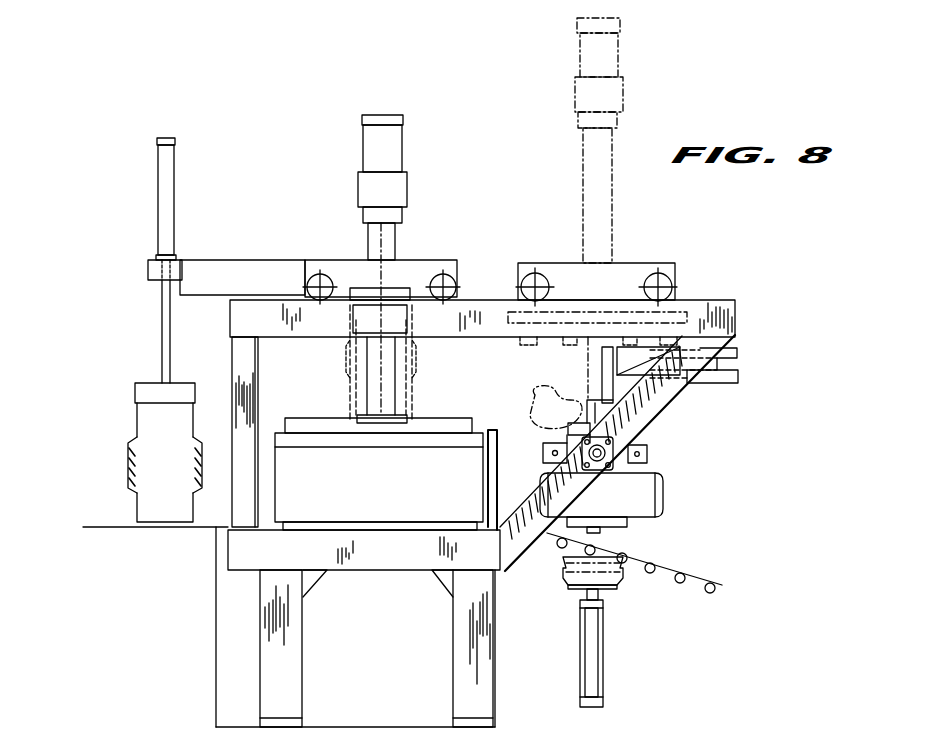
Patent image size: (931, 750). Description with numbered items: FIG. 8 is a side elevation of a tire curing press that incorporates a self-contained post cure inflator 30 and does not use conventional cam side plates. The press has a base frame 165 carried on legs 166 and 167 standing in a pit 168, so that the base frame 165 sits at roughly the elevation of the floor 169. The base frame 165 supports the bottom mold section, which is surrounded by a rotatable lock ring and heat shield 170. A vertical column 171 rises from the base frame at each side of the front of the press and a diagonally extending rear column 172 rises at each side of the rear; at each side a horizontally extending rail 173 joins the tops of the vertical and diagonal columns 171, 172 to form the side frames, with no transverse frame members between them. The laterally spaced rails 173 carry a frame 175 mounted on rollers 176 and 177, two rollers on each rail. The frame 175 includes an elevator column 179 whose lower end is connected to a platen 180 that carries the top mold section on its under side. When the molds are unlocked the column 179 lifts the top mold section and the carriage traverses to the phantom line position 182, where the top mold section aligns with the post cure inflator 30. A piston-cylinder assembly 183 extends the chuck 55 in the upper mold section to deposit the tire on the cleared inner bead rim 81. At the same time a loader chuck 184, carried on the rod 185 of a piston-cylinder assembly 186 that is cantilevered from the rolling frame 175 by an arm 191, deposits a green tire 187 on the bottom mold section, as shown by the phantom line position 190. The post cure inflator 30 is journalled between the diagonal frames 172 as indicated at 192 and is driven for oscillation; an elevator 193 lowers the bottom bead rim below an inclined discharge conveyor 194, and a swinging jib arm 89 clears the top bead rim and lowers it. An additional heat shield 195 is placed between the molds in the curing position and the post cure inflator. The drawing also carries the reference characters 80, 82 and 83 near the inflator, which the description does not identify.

The post cure inflator 30 is at (652, 455).
The chuck 55 is at (570, 383).
The pulley 80 is at (743, 373).
The inner bead rim 81 is at (567, 440).
The flange bearing 82 is at (613, 470).
The drive motor 83 is at (637, 518).
The swinging jib arm 89 is at (738, 345).
The base frame 165 is at (250, 558).
The leg 166 is at (292, 657).
The leg 167 is at (485, 680).
The pit 168 is at (368, 723).
The floor 169 is at (93, 525).
The rotatable lock ring and heat shield 170 is at (372, 505).
The vertical column 171 is at (260, 360).
The diagonally extending rear column 172 is at (518, 547).
The horizontally extending rail 173 is at (700, 305).
The frame 175 is at (410, 273).
The roller 176 is at (310, 273).
The roller 177 is at (448, 270).
The elevator column 179 is at (395, 362).
The platen 180 is at (450, 418).
The phantom line position 182 is at (618, 253).
The piston-cylinder assembly 183 is at (403, 150).
The loader chuck 184 is at (153, 425).
The rod 185 is at (163, 322).
The piston-cylinder assembly 186 is at (173, 190).
The green tire 187 is at (128, 473).
The phantom line position 190 is at (348, 390).
The arm 191 is at (208, 268).
The journal 192 is at (647, 447).
The elevator 193 is at (597, 663).
The inclined discharge conveyor 194 is at (647, 560).
The heat shield 195 is at (500, 430).